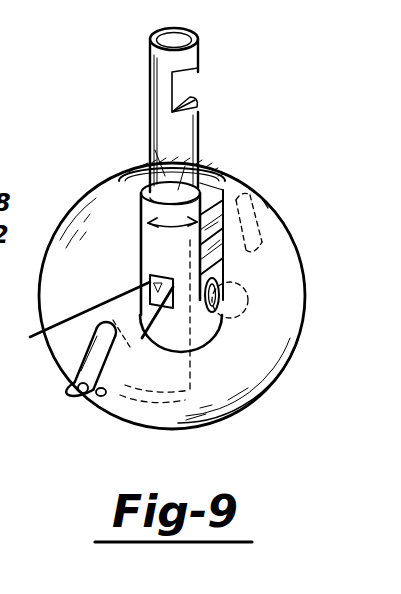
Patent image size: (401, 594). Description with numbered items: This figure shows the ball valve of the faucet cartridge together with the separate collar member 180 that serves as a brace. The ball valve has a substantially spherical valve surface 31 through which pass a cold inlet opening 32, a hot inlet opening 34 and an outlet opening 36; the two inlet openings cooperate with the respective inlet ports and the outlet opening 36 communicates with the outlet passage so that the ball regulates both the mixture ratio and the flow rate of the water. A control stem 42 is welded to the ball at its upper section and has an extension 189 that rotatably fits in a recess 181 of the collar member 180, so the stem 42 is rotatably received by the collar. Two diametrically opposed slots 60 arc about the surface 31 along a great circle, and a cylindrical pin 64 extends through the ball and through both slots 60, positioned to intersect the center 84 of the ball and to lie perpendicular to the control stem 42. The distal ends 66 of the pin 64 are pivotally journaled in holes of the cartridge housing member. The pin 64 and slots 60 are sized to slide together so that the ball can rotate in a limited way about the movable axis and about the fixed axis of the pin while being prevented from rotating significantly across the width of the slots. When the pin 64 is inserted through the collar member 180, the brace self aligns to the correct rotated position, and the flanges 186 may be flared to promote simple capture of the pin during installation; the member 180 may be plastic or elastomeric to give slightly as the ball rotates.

The spherical valve surface 31 is at (62, 218).
The cold inlet opening 32 is at (220, 300).
The hot inlet opening 34 is at (137, 403).
The outlet opening 36 is at (43, 335).
The control stem 42 is at (163, 67).
The slots 60 is at (267, 223).
The pin 64 is at (76, 382).
The distal ends 66 is at (263, 200).
The center 84 is at (228, 418).
The collar member 180 is at (222, 193).
The recess 181 is at (147, 172).
The flanges 186 is at (150, 288).
The extension 189 is at (180, 187).